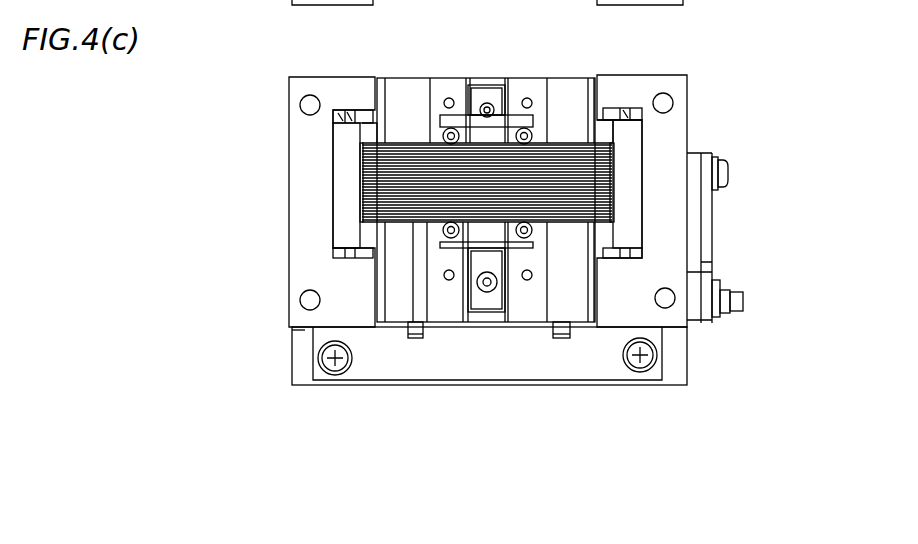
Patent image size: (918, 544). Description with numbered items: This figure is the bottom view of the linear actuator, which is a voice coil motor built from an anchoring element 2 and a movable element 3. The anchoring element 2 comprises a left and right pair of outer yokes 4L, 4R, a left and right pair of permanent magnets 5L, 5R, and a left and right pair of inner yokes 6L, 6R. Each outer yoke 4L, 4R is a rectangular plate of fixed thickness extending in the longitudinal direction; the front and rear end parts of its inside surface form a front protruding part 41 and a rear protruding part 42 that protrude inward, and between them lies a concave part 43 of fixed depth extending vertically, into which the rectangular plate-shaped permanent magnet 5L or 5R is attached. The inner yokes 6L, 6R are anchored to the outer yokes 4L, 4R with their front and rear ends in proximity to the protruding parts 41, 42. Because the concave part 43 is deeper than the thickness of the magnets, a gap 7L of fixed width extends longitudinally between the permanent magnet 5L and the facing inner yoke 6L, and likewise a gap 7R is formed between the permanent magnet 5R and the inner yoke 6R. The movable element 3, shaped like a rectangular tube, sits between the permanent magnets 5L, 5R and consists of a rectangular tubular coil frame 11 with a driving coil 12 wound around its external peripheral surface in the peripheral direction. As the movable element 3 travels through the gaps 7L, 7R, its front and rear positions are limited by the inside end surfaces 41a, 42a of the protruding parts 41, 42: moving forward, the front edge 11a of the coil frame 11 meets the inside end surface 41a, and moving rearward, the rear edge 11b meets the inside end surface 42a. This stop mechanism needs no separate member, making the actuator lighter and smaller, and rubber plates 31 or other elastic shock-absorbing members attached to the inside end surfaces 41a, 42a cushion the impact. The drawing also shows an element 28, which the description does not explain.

The anchoring element 2 is at (689, 263).
The movable element 3 is at (507, 185).
The outer yoke 4R is at (298, 193).
The outer yoke 4L is at (690, 130).
The permanent magnet 5R is at (357, 202).
The permanent magnet 5L is at (627, 190).
The inner yoke 6R is at (350, 300).
The inner yoke 6L is at (605, 240).
The gap 7R is at (367, 125).
The gap 7L is at (605, 123).
The coil frame 11 is at (552, 220).
The front edge 11a is at (403, 138).
The rear edge 11b is at (417, 263).
The driving coil 12 is at (482, 226).
The adjusting knob 28 is at (713, 322).
The rubber plate 31 is at (335, 115).
The front protruding part 41 is at (350, 95).
The inside end surface 41a is at (335, 110).
The rear protruding part 42 is at (298, 332).
The inside end surface 42a is at (333, 250).
The concave part 43 is at (338, 147).